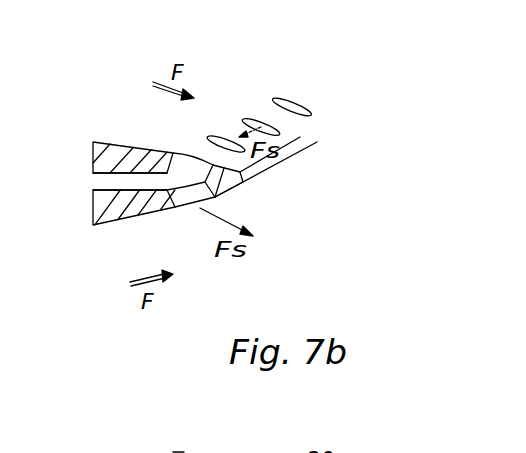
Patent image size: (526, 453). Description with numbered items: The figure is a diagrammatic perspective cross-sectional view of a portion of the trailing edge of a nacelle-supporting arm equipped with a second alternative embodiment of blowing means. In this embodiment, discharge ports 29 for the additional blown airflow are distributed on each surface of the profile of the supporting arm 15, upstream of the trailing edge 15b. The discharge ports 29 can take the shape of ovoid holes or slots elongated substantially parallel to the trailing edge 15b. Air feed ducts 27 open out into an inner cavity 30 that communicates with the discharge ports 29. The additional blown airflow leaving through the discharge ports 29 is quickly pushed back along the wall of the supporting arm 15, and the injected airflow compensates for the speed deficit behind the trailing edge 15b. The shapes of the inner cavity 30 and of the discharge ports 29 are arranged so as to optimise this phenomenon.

The supporting arm 15 is at (111, 150).
The trailing edge 15b is at (293, 156).
The air feed ducts 27 is at (100, 181).
The discharge ports 29 is at (186, 152).
The inner cavity 30 is at (183, 189).